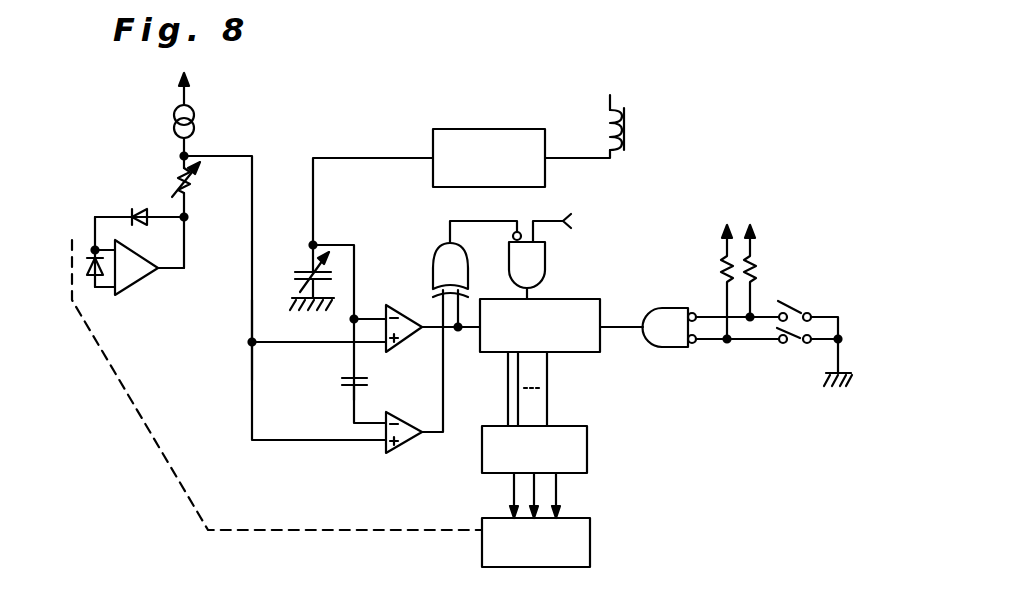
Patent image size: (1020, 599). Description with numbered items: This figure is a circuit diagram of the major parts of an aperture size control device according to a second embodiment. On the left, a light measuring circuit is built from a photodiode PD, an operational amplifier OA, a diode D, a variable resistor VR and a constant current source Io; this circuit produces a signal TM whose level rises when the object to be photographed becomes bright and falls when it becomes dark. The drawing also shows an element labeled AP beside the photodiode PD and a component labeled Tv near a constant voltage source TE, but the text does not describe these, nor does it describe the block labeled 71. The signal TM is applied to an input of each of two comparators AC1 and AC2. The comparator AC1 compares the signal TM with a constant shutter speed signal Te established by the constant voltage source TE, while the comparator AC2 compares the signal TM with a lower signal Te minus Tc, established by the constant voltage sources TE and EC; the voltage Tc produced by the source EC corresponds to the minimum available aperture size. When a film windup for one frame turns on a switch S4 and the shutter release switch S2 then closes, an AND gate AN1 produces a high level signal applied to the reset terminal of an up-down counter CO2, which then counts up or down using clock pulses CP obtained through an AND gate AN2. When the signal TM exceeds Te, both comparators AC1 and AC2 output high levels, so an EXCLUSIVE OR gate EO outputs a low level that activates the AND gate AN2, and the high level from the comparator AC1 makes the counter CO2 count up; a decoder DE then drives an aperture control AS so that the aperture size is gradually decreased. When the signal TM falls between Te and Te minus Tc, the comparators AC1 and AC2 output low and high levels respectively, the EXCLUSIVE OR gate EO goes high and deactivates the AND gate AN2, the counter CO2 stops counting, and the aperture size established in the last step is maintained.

The constant current source Io is at (194, 112).
The variable resistor VR is at (197, 193).
The diode D is at (140, 206).
The operational amplifier OA is at (148, 278).
The photodiode PD is at (92, 285).
The aperture AP is at (72, 240).
The measured signal TM is at (234, 335).
The variable capacitor (shutter time setting) Tv is at (303, 271).
The constant voltage source TE is at (298, 281).
The shutter speed signal Te is at (349, 334).
The constant voltage source EC is at (342, 381).
The voltage Tc is at (373, 389).
The comparator AC1 is at (410, 342).
The comparator AC2 is at (405, 447).
The EXCLUSIVE OR gate EO is at (435, 258).
The AND gate AN2 is at (556, 265).
The clock pulses CP is at (569, 227).
The up-down counter CO2 is at (577, 299).
The decoder DE is at (587, 447).
The aperture control AS is at (590, 538).
The shutter speed control circuit 71 is at (483, 129).
The AND gate AN1 is at (667, 347).
The shutter release switch S2 is at (799, 299).
The switch S4 is at (792, 343).